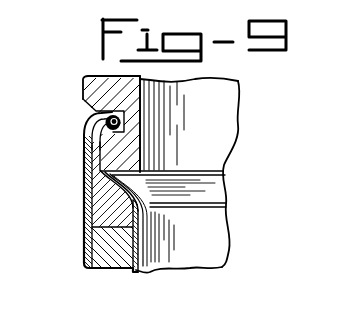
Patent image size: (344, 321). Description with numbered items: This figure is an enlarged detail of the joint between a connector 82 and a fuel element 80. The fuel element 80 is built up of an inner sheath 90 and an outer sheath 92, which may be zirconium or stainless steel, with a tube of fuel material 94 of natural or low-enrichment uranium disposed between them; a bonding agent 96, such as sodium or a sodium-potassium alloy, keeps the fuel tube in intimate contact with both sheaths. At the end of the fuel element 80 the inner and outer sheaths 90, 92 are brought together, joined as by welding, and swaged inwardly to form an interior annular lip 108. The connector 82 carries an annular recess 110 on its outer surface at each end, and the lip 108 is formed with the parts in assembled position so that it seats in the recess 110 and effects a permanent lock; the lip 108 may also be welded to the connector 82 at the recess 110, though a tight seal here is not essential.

The fuel element 80 is at (76, 271).
The connector 82 is at (78, 87).
The inner sheath 90 is at (136, 268).
The outer sheath 92 is at (88, 233).
The tube of fuel material 94 is at (102, 256).
The bonding agent 96 is at (105, 207).
The interior annular lip 108 is at (86, 122).
The annular recess 110 is at (96, 109).